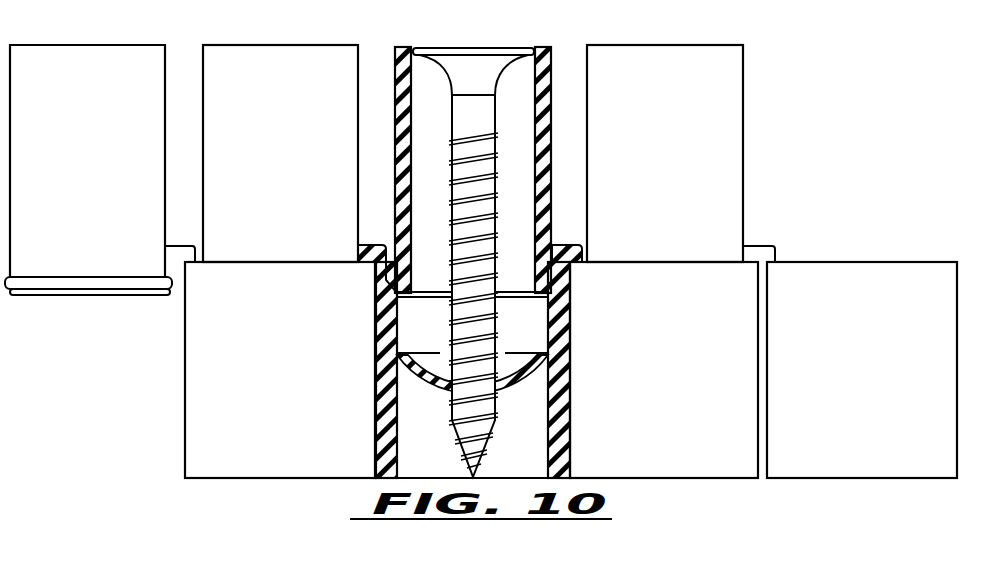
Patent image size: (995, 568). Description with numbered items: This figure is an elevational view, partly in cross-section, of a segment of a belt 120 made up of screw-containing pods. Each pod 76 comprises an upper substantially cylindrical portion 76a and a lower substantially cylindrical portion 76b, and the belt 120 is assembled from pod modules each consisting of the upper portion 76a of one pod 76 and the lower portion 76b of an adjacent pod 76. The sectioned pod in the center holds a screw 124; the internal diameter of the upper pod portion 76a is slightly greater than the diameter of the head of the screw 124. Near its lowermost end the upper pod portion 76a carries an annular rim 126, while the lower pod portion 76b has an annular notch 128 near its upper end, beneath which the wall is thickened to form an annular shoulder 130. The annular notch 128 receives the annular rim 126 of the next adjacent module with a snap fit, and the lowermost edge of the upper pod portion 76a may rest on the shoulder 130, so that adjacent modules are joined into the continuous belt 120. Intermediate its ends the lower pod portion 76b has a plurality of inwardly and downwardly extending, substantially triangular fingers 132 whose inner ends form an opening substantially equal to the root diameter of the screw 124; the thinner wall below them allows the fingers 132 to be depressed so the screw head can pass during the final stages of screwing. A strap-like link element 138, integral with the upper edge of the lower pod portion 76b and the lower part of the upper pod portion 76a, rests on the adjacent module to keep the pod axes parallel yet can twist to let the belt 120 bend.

The belt 120 is at (481, 241).
The pod 76 is at (483, 241).
The upper pod portion 76a is at (100, 168).
The lower pod portion 76b is at (300, 376).
The screw 124 is at (426, 47).
The annular rim 126 is at (20, 292).
The annular notch 128 is at (548, 293).
The annular shoulder 130 is at (545, 302).
The fingers 132 is at (425, 386).
The link element 138 is at (176, 252).